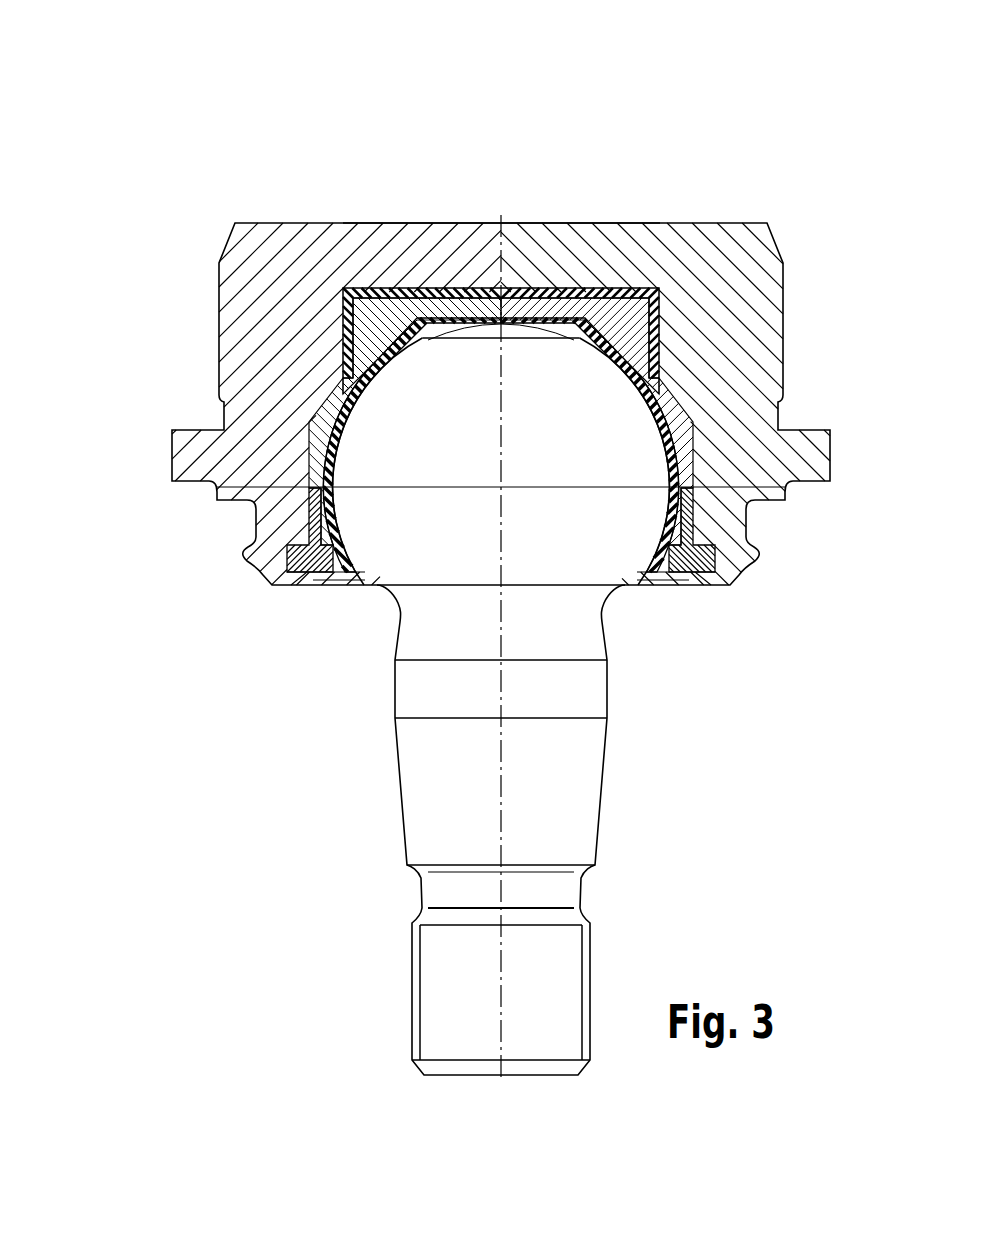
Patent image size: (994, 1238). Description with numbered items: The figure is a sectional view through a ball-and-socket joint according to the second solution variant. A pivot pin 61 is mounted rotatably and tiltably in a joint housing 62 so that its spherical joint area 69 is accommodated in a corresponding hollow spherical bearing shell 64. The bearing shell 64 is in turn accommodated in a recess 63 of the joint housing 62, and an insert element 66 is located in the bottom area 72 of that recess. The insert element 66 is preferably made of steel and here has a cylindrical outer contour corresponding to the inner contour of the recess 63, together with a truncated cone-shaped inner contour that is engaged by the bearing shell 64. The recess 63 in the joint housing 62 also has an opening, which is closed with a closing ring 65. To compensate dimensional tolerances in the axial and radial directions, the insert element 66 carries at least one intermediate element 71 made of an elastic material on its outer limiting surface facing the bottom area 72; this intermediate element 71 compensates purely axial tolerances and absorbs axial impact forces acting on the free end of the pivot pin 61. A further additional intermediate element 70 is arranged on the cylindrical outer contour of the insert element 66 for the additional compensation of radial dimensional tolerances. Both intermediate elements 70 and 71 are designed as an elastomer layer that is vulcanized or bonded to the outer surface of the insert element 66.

The pivot pin 61 is at (440, 700).
The joint housing 62 is at (718, 265).
The recess 63 is at (633, 432).
The bearing shell 64 is at (690, 465).
The closing ring 65 is at (285, 561).
The insert element 66 is at (456, 297).
The spherical joint area 69 is at (378, 457).
The additional intermediate element 70 is at (343, 321).
The intermediate element 71 is at (393, 290).
The bottom area 72 is at (571, 270).